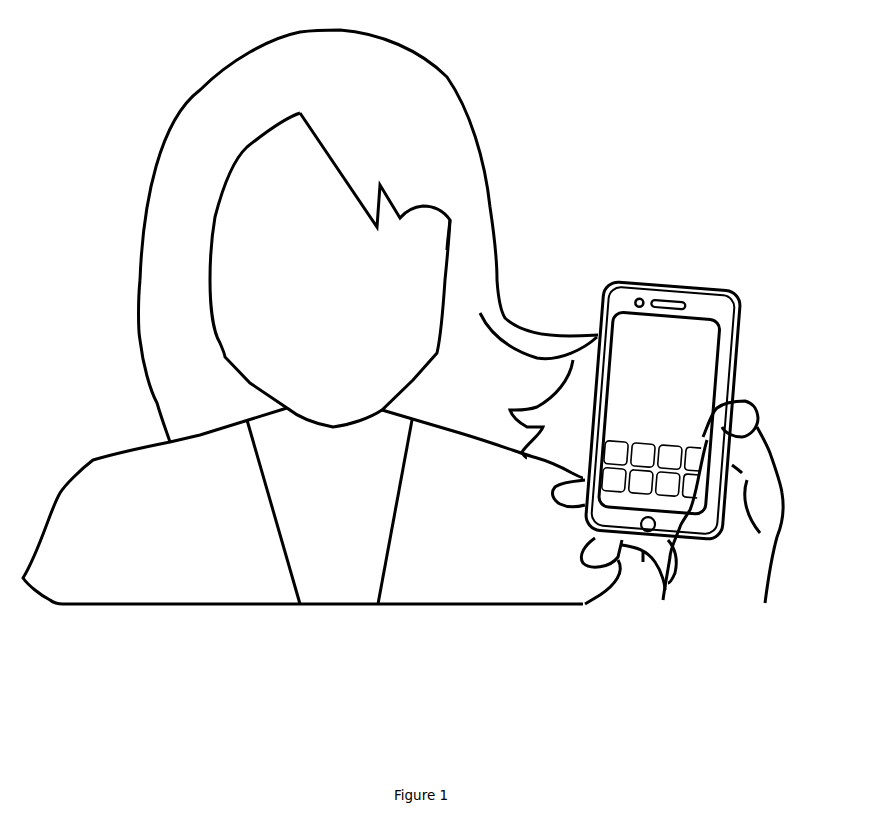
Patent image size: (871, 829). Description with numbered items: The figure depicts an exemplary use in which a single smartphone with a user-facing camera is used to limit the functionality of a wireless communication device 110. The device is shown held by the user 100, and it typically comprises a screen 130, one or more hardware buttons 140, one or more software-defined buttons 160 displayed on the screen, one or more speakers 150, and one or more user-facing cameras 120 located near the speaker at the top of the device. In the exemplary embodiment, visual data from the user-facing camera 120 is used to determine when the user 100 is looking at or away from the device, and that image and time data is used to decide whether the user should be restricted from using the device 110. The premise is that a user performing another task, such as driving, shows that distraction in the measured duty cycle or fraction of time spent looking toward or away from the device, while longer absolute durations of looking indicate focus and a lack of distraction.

The user 100 is at (262, 100).
The wireless communication device 110 is at (685, 285).
The user-facing camera 120 is at (642, 297).
The screen 130 is at (658, 415).
The hardware button 140 is at (648, 530).
The speaker 150 is at (670, 302).
The software-defined button 160 is at (613, 483).